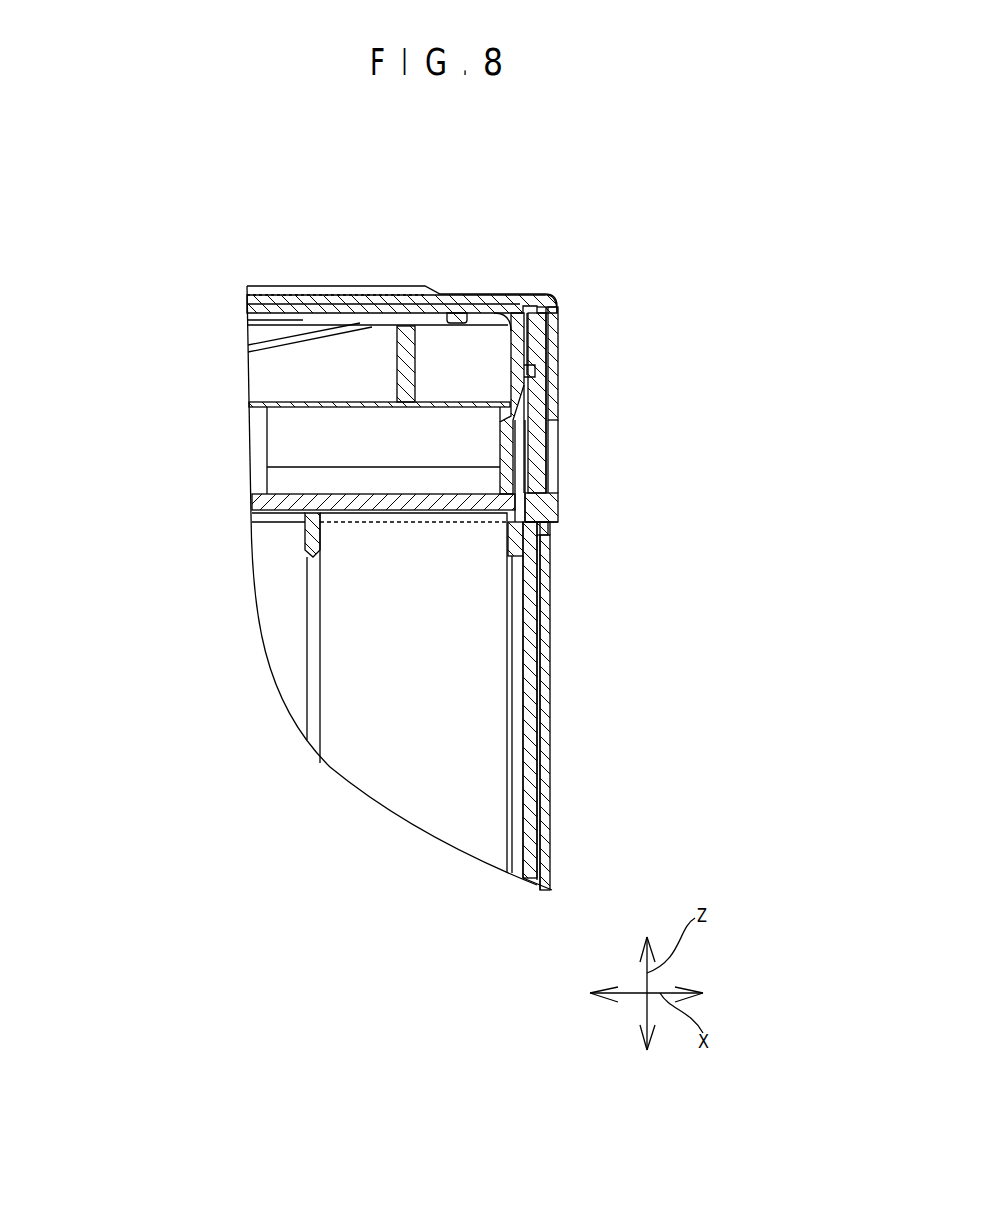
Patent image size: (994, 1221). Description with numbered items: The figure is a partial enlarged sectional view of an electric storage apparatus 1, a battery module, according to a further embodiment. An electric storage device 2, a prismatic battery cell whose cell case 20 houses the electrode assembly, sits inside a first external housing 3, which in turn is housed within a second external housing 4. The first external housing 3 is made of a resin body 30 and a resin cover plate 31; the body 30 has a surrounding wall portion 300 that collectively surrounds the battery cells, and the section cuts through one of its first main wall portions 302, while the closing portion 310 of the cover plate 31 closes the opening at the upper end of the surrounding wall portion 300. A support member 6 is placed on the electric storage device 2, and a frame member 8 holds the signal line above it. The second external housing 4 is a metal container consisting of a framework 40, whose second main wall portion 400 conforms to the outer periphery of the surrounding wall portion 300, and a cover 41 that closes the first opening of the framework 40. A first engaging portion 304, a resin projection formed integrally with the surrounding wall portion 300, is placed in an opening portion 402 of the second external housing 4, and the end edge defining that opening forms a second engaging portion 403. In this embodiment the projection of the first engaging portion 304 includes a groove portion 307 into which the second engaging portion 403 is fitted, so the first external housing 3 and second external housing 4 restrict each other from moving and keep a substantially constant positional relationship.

The electric storage apparatus 1 is at (123, 265).
The electric storage device 2 is at (403, 672).
The cell case 20 is at (394, 699).
The first external housing 3 is at (806, 628).
The body 30 is at (537, 768).
The cover plate 31 is at (555, 300).
The surrounding wall portion 300 is at (611, 706).
The first main wall portion 302 is at (523, 718).
The first engaging portion 304 is at (548, 483).
The groove portion 307 is at (548, 528).
The closing portion 310 is at (457, 310).
The second external housing 4 is at (724, 406).
The framework 40 is at (557, 570).
The cover 41 is at (552, 365).
The second main wall portion 400 is at (543, 672).
The opening portion 402 is at (550, 442).
The second engaging portion 403 is at (549, 521).
The support member 6 is at (377, 502).
The frame member 8 is at (300, 403).